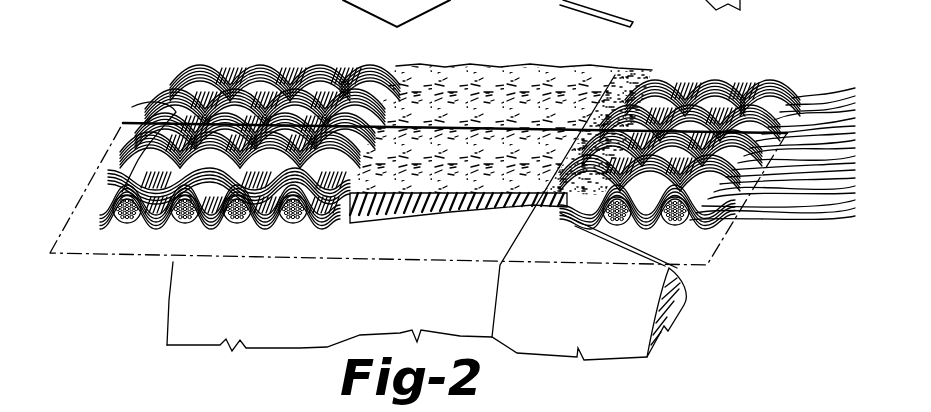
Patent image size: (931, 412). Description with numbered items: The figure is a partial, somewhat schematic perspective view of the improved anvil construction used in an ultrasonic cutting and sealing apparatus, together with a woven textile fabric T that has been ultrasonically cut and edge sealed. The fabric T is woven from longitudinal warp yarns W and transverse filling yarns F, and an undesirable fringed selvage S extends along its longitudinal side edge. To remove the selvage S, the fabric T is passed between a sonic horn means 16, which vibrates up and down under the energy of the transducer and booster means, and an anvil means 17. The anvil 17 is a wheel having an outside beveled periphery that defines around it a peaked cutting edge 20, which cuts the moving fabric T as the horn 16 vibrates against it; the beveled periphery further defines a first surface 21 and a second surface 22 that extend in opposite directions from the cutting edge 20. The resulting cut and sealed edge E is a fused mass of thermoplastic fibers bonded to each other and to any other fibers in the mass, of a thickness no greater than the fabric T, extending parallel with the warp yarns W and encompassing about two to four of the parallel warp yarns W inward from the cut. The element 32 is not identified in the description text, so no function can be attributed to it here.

The woven textile fabric T is at (246, 62).
The cut and sealed edge E is at (617, 80).
The fringed selvage S is at (835, 88).
The filling yarns F is at (187, 83).
The warp yarns W is at (272, 262).
The sonic horn means 16 is at (106, 266).
The anvil means 17 is at (274, 354).
The peaked cutting edge 20 is at (493, 293).
The first surface 21 is at (357, 305).
The second surface 22 is at (605, 325).
The pointer 32 is at (559, 13).